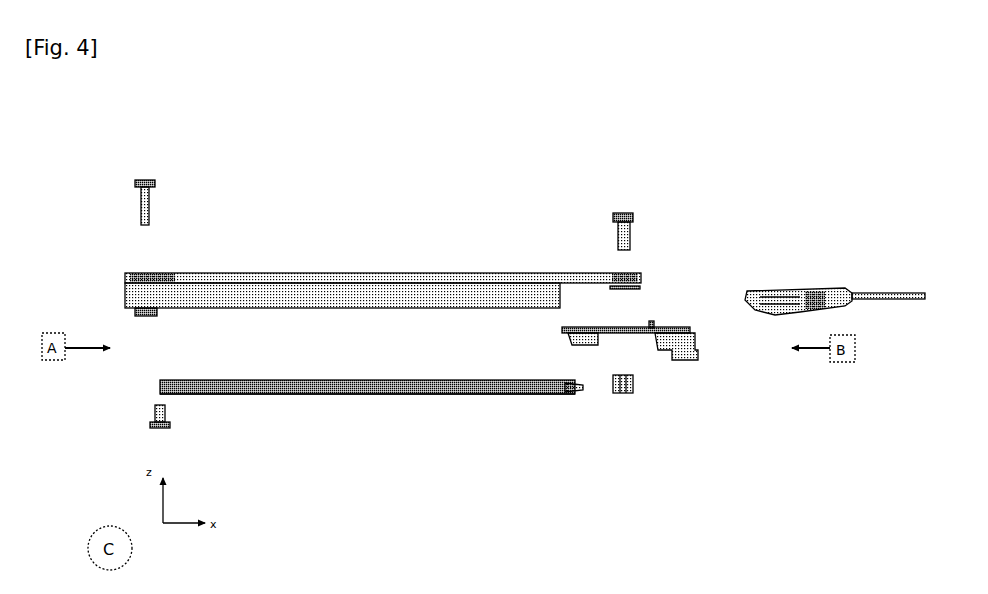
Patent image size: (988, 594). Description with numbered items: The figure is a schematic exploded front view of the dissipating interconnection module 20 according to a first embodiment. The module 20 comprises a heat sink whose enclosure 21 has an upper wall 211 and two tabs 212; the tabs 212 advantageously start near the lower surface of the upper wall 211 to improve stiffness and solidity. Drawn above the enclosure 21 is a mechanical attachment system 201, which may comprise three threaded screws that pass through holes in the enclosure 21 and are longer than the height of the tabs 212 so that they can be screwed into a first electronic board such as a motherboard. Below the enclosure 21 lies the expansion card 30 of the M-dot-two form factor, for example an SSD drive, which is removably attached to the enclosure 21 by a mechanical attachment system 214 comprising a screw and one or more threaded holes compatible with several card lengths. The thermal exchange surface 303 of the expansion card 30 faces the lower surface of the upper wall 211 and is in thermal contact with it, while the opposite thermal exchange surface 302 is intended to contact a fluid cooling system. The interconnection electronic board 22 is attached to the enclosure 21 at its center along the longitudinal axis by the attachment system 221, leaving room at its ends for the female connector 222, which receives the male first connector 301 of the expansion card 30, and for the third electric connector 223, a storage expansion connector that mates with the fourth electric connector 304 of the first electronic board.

The dissipating interconnection module 20 is at (769, 470).
The enclosure 21 is at (326, 242).
The mechanical attachment system 201 is at (147, 271).
The upper wall 211 is at (527, 271).
The tabs 212 is at (404, 296).
The mechanical attachment system 214 is at (172, 419).
The interconnection electronic board 22 is at (636, 339).
The second M.2 connector 221 is at (636, 211).
The female M.2 connector 222 is at (591, 350).
The third electric connector 223 is at (691, 364).
The expansion card 30 is at (487, 383).
The first M.2 connector 301 is at (574, 395).
The thermal exchange surface 302 is at (342, 397).
The thermal exchange surface 303 is at (352, 377).
The fourth electric connector 304 is at (796, 283).